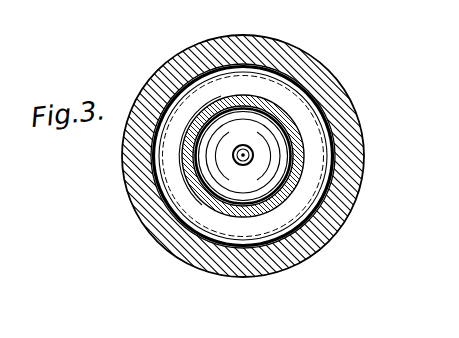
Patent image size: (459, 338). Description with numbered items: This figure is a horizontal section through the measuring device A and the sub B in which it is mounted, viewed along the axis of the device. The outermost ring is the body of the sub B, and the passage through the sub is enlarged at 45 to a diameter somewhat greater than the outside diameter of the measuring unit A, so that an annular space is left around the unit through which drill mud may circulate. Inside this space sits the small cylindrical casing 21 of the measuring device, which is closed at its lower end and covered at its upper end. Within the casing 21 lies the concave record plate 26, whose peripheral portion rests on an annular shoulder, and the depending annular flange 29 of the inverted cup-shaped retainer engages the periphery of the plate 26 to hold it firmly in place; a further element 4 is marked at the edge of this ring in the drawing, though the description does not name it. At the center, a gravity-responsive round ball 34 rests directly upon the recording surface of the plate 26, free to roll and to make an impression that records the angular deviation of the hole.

The measuring device A is at (231, 98).
The sub B is at (338, 95).
The enlarged portion of the passage 45 is at (265, 85).
The casing 21 is at (235, 208).
The record plate 26 is at (267, 188).
The inner ring 4 is at (297, 147).
The depending annular flange 29 is at (283, 178).
The ball 34 is at (240, 148).